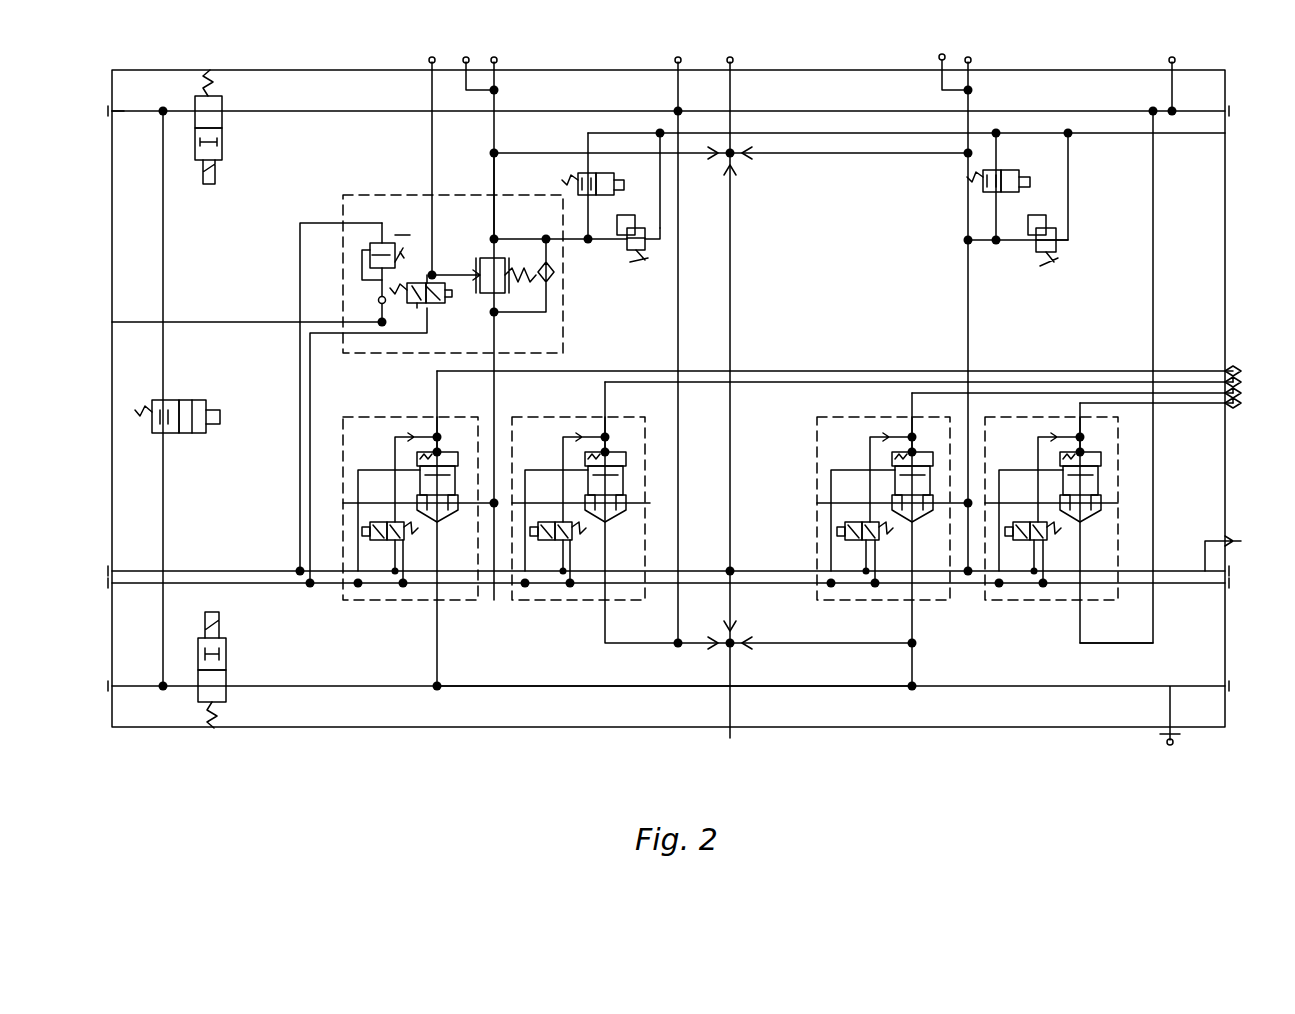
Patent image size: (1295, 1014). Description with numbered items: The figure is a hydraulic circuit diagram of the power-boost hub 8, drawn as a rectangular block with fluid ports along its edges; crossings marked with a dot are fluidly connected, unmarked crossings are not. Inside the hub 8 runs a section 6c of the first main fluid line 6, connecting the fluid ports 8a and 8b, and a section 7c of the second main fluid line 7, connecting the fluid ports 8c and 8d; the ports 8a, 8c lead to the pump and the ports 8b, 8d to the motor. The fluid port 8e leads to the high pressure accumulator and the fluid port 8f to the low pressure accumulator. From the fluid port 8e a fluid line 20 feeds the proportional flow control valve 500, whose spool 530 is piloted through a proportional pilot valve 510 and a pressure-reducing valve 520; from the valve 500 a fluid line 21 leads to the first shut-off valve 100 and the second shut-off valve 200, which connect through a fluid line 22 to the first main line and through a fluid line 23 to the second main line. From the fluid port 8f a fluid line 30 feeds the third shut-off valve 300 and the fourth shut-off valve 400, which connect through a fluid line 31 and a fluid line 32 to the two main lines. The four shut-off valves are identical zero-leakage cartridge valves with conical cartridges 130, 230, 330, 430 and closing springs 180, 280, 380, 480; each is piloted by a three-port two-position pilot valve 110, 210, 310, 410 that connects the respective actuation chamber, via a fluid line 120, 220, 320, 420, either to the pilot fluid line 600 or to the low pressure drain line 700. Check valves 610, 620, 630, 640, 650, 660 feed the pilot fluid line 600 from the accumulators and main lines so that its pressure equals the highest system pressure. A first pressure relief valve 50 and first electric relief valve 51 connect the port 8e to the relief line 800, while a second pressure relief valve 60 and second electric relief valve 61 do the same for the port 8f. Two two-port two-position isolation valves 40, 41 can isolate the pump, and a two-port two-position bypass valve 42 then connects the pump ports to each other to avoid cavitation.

The first main fluid line 6 is at (660, 690).
The section of the first main fluid line 6c is at (535, 690).
The second main fluid line 7 is at (628, 103).
The section of the second main fluid line 7c is at (528, 103).
The power-boost hub 8 is at (916, 806).
The fluid port 8a is at (114, 686).
The fluid port 8b is at (1225, 686).
The fluid port 8c is at (116, 112).
The fluid port 8d is at (1229, 115).
The fluid port 8e is at (494, 64).
The fluid port 8f is at (972, 70).
The fluid line 20 is at (548, 144).
The fluid line 21 is at (437, 386).
The fluid line 22 is at (440, 648).
The fluid line 23 is at (680, 475).
The fluid line 30 is at (870, 155).
The fluid line 31 is at (914, 643).
The fluid line 32 is at (1152, 345).
The isolation valve 40 is at (244, 128).
The isolation valve 41 is at (247, 671).
The bypass valve 42 is at (220, 432).
The first pressure relief valve 50 is at (650, 272).
The first electric relief valve 51 is at (563, 183).
The second pressure relief valve 60 is at (1049, 275).
The second electric relief valve 61 is at (1016, 172).
The first shut-off valve 100 is at (466, 522).
The pilot valve 110 is at (392, 558).
The fluid line 120 is at (393, 448).
The cartridge 130 is at (439, 478).
The closing spring 180 is at (430, 445).
The second shut-off valve 200 is at (634, 522).
The pilot valve 210 is at (556, 558).
The fluid line 220 is at (561, 448).
The cartridge 230 is at (607, 478).
The closing spring 280 is at (598, 445).
The third shut-off valve 300 is at (941, 522).
The pilot valve 310 is at (862, 558).
The fluid line 320 is at (868, 448).
The cartridge 330 is at (914, 478).
The closing spring 380 is at (905, 445).
The fourth shut-off valve 400 is at (1109, 522).
The pilot valve 410 is at (1035, 558).
The fluid line 420 is at (1036, 448).
The cartridge 430 is at (1082, 478).
The closing spring 480 is at (1073, 445).
The proportional flow control valve 500 is at (492, 242).
The proportional pilot valve 510 is at (448, 314).
The pressure-reducing valve 520 is at (378, 230).
The valve spool 530 is at (476, 265).
The pilot fluid line 600 is at (300, 290).
The check valve 610 is at (719, 170).
The check valve 620 is at (756, 160).
The check valve 630 is at (745, 178).
The check valve 640 is at (720, 657).
The check valve 650 is at (746, 640).
The check valve 660 is at (728, 635).
The low pressure drain line 700 is at (312, 370).
The relief line 800 is at (780, 130).